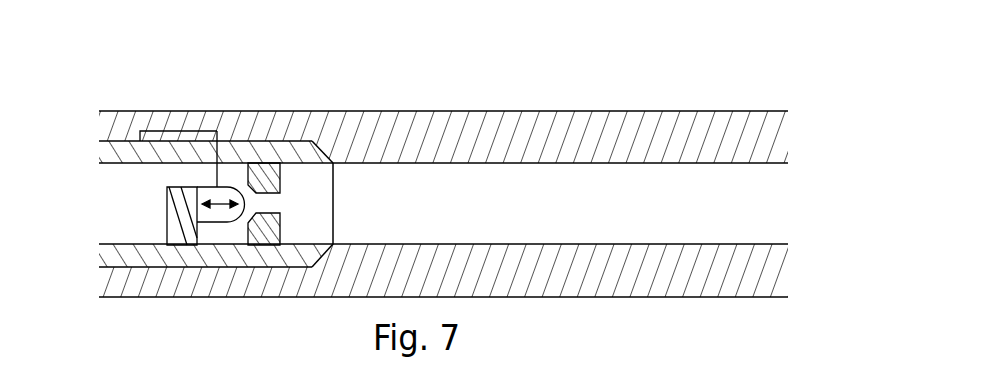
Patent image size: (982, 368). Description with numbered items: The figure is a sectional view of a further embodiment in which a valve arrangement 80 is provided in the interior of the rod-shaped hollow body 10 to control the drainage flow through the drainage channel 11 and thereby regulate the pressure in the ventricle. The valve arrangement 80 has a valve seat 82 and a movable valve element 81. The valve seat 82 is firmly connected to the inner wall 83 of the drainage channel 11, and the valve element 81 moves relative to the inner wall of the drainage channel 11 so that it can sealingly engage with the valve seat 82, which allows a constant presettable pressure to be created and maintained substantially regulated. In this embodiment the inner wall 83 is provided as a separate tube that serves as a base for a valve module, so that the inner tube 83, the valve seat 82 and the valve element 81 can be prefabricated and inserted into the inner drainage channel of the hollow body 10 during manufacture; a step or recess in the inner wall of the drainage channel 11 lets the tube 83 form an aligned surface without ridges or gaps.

The rod-shaped hollow body 10 is at (555, 137).
The drainage channel 11 is at (573, 208).
The valve arrangement 80 is at (236, 177).
The valve element 81 is at (229, 188).
The valve seat 82 is at (265, 237).
The inner wall 83 is at (305, 152).